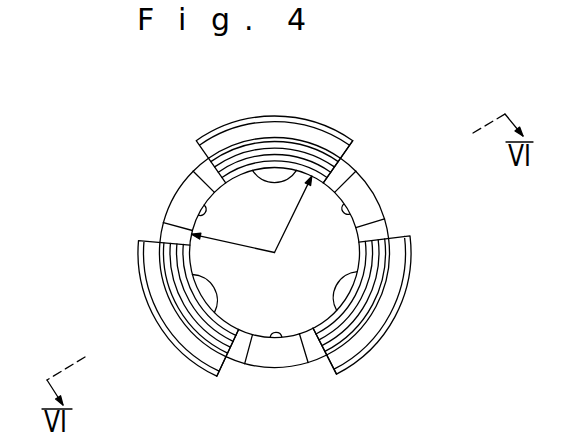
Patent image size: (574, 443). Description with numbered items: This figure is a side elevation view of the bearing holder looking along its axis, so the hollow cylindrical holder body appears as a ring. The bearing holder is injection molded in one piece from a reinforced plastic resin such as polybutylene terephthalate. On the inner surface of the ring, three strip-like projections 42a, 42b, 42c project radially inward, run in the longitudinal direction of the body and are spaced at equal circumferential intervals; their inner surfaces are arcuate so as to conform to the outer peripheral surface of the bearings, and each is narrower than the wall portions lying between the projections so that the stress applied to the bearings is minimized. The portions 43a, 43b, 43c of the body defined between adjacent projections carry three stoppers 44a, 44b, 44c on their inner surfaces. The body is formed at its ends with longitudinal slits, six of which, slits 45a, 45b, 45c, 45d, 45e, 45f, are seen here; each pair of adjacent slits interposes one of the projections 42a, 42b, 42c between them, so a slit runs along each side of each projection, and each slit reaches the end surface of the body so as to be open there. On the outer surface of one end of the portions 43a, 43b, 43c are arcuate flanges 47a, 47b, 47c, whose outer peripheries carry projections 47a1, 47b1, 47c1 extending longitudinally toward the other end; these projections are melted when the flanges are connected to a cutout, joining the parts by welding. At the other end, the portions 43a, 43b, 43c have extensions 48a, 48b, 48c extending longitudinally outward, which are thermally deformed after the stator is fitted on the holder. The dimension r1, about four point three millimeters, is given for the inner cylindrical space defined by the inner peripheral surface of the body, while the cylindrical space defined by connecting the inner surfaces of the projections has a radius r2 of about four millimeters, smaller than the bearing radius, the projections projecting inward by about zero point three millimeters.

The strip-like projection 42a is at (358, 185).
The strip-like projection 42b is at (281, 342).
The strip-like projection 42c is at (187, 213).
The portion of cylindrical holder body 43a is at (313, 146).
The portion of cylindrical holder body 43b is at (358, 314).
The portion of cylindrical holder body 43c is at (186, 311).
The stopper 44a is at (282, 178).
The stopper 44b is at (348, 287).
The stopper 44c is at (197, 287).
The slit 45a is at (380, 230).
The slit 45b is at (315, 357).
The slit 45c is at (235, 357).
The slit 45d is at (165, 229).
The slit 45e is at (201, 168).
The slit 45f is at (350, 166).
The arcuate flange 47a is at (240, 117).
The arcuate flange 47b is at (413, 273).
The arcuate flange 47c is at (183, 350).
The projection 47a1 is at (310, 121).
The projection 47b1 is at (385, 326).
The projection 47c1 is at (222, 352).
The extension 48a is at (222, 146).
The extension 48b is at (382, 257).
The extension 48c is at (163, 265).
The diameter of inner cylindrical space r1 is at (292, 214).
The radius of projection-defined cylindrical space r2 is at (233, 228).